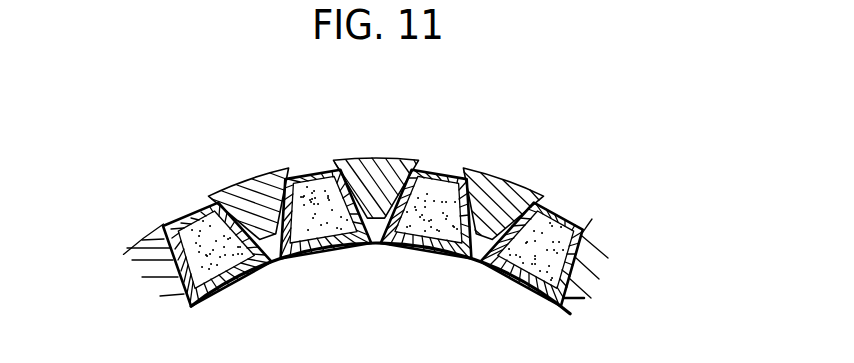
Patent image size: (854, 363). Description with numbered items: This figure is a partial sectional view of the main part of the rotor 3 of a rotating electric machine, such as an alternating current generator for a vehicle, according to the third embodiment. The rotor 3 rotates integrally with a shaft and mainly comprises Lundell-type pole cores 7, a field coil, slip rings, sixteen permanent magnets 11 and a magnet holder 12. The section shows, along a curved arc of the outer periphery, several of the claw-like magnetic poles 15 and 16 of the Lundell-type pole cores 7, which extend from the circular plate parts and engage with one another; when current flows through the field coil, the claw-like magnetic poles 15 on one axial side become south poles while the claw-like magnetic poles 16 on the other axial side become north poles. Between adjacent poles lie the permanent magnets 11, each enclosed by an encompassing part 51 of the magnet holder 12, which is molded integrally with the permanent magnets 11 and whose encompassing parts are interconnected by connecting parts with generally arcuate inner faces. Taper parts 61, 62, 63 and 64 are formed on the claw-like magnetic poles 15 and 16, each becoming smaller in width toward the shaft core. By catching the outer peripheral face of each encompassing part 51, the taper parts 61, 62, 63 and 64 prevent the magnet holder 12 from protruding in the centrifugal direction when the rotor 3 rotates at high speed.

The rotor 3 is at (177, 206).
The Lundell-type pole cores 7 is at (532, 178).
The permanent magnets 11 is at (215, 262).
The magnet holder 12 is at (510, 286).
The claw-like magnetic poles 15 is at (246, 192).
The claw-like magnetic poles 16 is at (375, 176).
The encompassing part 51 is at (551, 219).
The taper part 61 is at (229, 263).
The taper part 62 is at (321, 244).
The taper part 63 is at (330, 186).
The taper part 64 is at (408, 195).